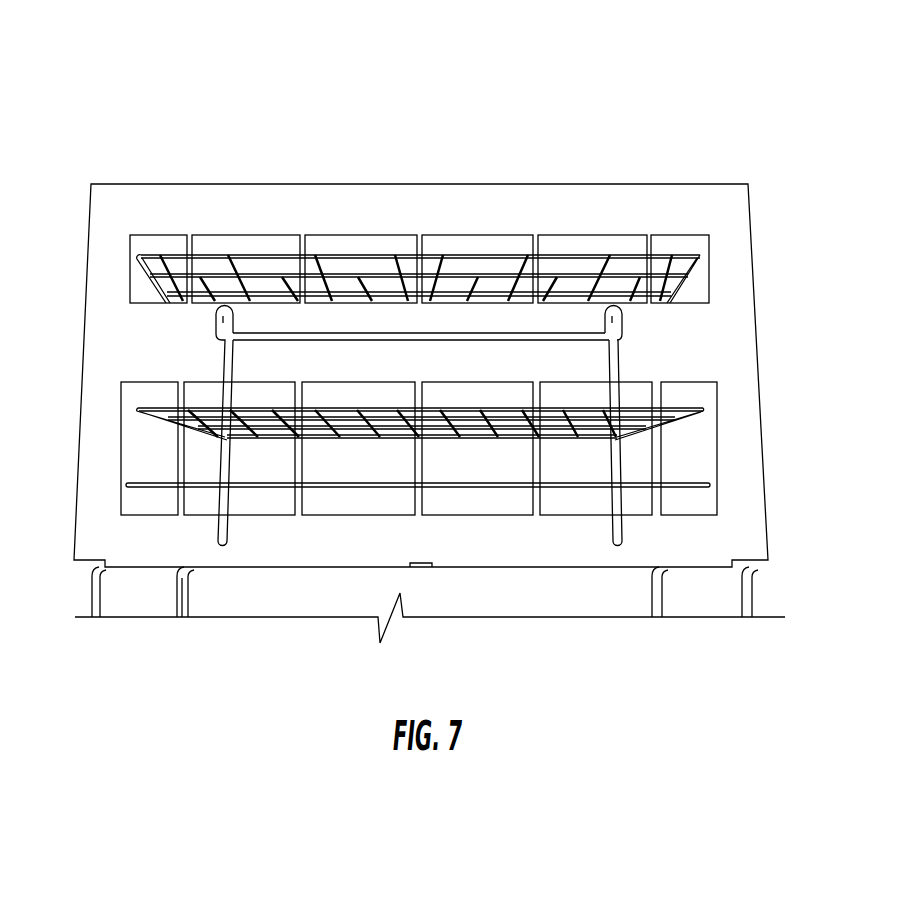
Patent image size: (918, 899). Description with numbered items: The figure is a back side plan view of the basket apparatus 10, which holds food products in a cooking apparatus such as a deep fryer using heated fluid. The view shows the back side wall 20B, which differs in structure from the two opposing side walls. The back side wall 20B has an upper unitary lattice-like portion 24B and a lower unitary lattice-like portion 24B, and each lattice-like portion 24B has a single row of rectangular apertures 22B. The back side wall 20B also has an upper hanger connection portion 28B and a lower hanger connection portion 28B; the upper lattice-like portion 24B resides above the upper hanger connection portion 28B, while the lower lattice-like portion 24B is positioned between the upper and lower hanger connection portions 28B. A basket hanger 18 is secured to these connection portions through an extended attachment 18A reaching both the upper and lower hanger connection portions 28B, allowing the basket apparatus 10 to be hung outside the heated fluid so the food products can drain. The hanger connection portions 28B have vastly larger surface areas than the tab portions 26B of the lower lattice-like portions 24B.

The basket apparatus 10 is at (93, 103).
The basket hanger 18 is at (278, 330).
The extended attachment 18A is at (325, 333).
The back side wall 20B is at (762, 452).
The apertures 22B is at (578, 475).
The unitary lattice-like portion 24B is at (520, 253).
The tab portions 26B is at (420, 270).
The hanger connection portion 28B is at (657, 333).